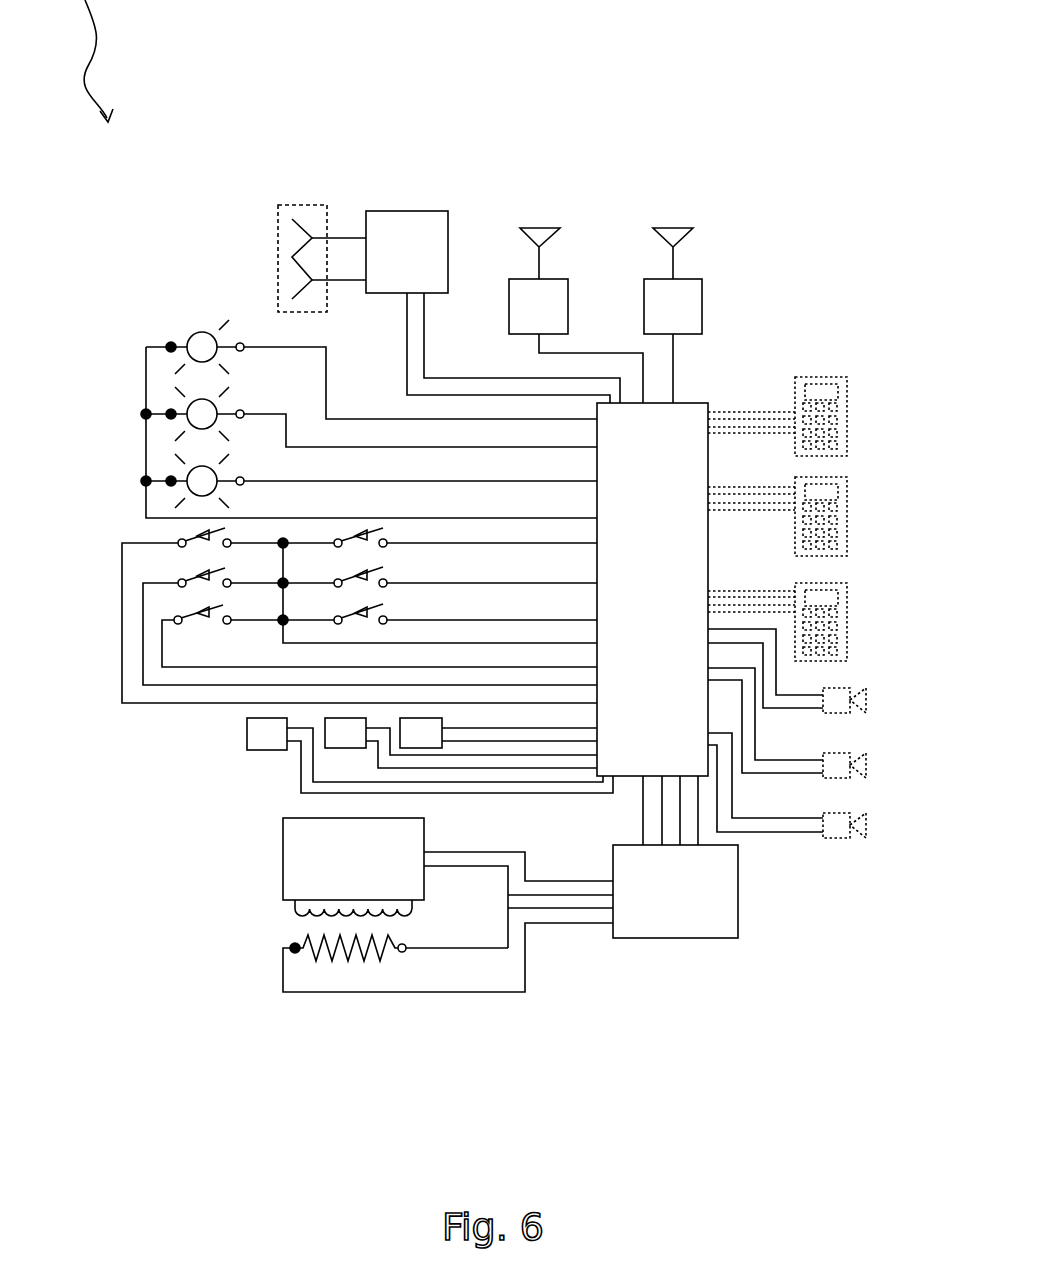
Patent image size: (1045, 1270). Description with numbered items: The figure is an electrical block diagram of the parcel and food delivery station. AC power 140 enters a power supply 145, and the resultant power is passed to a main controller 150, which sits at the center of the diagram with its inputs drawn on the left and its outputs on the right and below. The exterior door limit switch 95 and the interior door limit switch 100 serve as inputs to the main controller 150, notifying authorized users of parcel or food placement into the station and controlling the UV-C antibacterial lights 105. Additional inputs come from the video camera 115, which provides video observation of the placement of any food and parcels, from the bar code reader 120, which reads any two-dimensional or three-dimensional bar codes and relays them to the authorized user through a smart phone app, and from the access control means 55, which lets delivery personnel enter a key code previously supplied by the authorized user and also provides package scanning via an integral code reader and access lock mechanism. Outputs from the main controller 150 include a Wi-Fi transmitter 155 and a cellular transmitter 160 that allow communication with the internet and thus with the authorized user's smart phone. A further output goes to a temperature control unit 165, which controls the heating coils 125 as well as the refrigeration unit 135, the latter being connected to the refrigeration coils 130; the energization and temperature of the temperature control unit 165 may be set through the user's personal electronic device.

The access control means 55 is at (833, 410).
The exterior door limit switch 95 is at (181, 540).
The interior door limit switch 100 is at (347, 540).
The UV-C antibacterial lights 105 is at (188, 342).
The video camera 115 is at (850, 688).
The bar code reader 120 is at (257, 740).
The heating coils 125 is at (352, 960).
The refrigeration coils 130 is at (302, 920).
The refrigeration unit 135 is at (298, 866).
The AC power 140 is at (292, 239).
The power supply 145 is at (422, 247).
The main controller 150 is at (662, 432).
The Wi-Fi transmitter 155 is at (538, 307).
The cellular transmitter 160 is at (682, 307).
The temperature control unit 165 is at (682, 918).